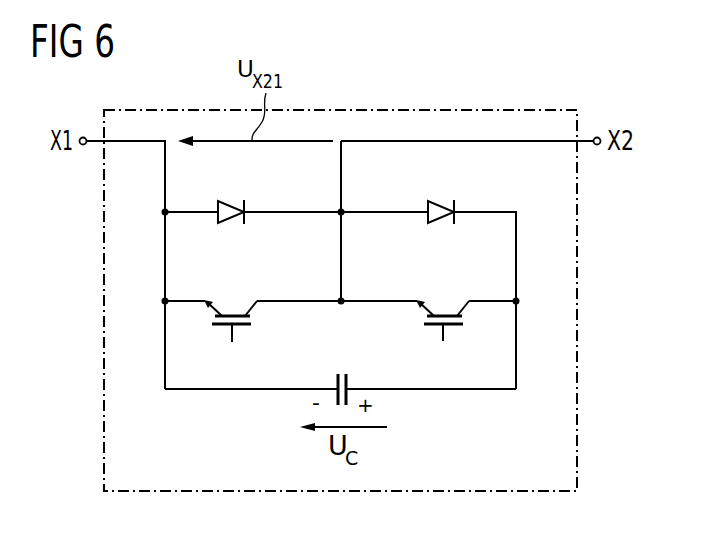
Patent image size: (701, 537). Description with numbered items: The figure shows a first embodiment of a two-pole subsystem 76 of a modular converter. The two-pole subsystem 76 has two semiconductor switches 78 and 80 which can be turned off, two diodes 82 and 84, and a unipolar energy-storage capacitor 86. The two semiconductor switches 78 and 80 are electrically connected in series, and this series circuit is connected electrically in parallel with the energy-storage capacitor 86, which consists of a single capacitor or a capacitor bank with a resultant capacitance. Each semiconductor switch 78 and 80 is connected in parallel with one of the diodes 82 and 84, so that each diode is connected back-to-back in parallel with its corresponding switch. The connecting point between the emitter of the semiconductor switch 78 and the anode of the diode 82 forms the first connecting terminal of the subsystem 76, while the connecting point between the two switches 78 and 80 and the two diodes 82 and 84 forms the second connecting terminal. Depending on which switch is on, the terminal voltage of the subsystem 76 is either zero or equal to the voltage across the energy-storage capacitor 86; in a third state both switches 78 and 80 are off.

The two-pole subsystem 76 is at (578, 297).
The semiconductor switch which can be turned off 78 is at (219, 328).
The semiconductor switch which can be turned off 80 is at (455, 340).
The diode 82 is at (245, 206).
The diode 84 is at (455, 206).
The unipolar energy-storage capacitor 86 is at (349, 384).